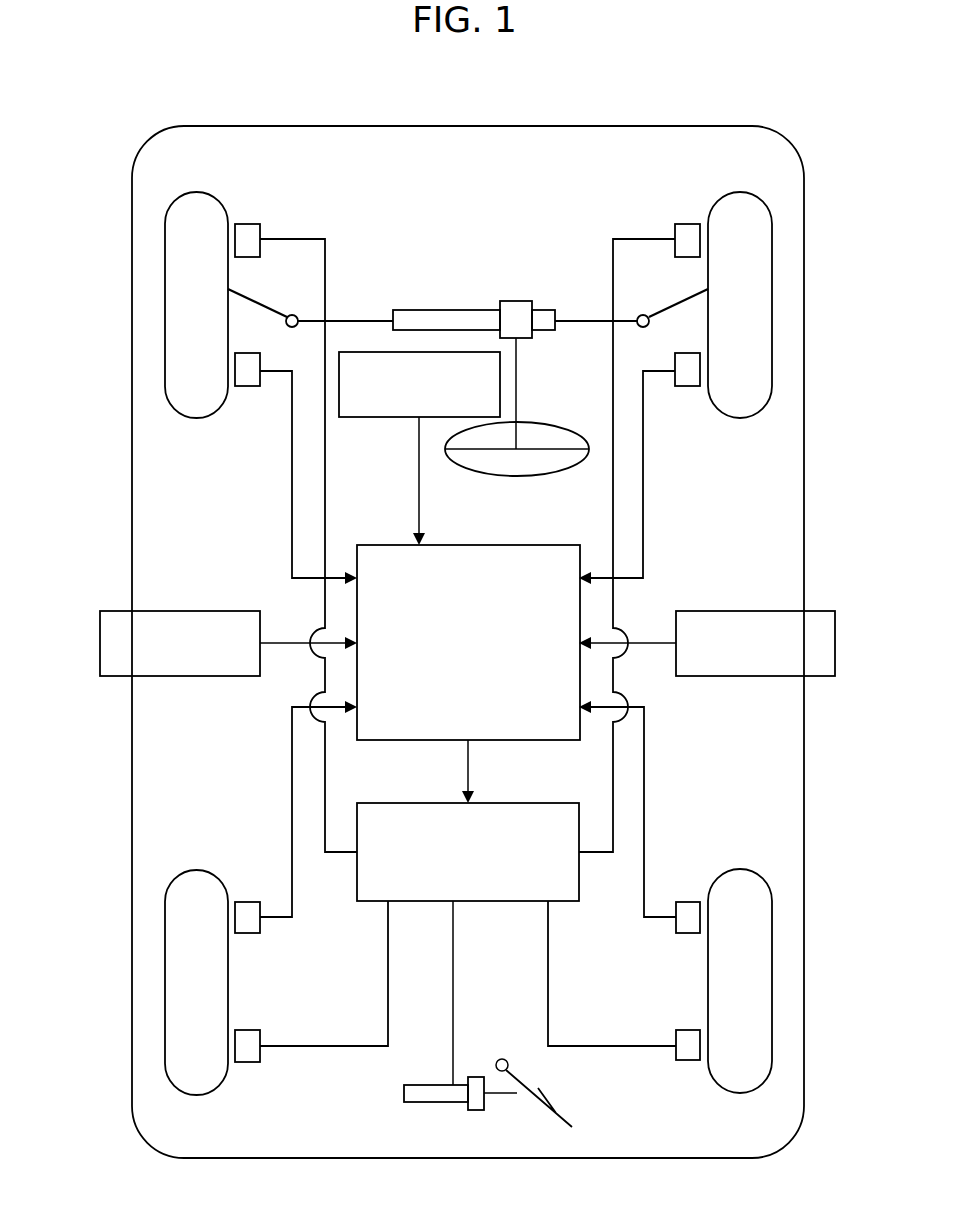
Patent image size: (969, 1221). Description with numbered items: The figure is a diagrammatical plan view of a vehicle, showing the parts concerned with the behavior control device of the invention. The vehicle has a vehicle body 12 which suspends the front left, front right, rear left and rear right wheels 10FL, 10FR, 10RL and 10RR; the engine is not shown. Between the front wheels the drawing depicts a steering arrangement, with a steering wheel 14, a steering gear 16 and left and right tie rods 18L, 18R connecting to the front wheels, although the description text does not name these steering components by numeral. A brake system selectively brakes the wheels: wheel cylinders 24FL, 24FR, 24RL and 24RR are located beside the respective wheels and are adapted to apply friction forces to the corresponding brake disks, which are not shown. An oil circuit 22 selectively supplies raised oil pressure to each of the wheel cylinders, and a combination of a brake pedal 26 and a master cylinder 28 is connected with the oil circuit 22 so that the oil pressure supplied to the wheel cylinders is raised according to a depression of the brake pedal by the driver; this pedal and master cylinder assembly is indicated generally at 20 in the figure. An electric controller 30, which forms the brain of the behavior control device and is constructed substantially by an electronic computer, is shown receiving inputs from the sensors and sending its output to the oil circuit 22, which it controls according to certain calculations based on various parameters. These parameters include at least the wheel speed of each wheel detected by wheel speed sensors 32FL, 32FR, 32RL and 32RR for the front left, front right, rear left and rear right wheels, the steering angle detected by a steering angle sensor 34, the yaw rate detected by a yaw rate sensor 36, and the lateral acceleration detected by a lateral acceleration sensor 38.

The front left wheel 10FL is at (165, 321).
The front right wheel 10FR is at (772, 321).
The rear left wheel 10RL is at (165, 989).
The rear right wheel 10RR is at (772, 990).
The vehicle body 12 is at (805, 546).
The steering wheel 14 is at (517, 477).
The steering gear (rack and pinion) 16 is at (507, 286).
The left tie rod 18L is at (250, 297).
The right tie rod 18R is at (688, 295).
The brake actuating device 20 is at (463, 1107).
The oil circuit 22 is at (468, 944).
The front left wheel cylinder 24FL is at (248, 232).
The front right wheel cylinder 24FR is at (688, 232).
The rear left wheel cylinder 24RL is at (248, 1040).
The rear right wheel cylinder 24RR is at (688, 1030).
The brake pedal 26 is at (562, 1118).
The master cylinder 28 is at (420, 1102).
The electric controller 30 is at (468, 674).
The front left wheel speed sensor 32FL is at (248, 387).
The front right wheel speed sensor 32FR is at (688, 387).
The rear left wheel speed sensor 32RL is at (250, 903).
The rear right wheel speed sensor 32RR is at (688, 903).
The steering angle sensor 34 is at (378, 418).
The yaw rate sensor 36 is at (200, 610).
The lateral acceleration sensor 38 is at (740, 677).